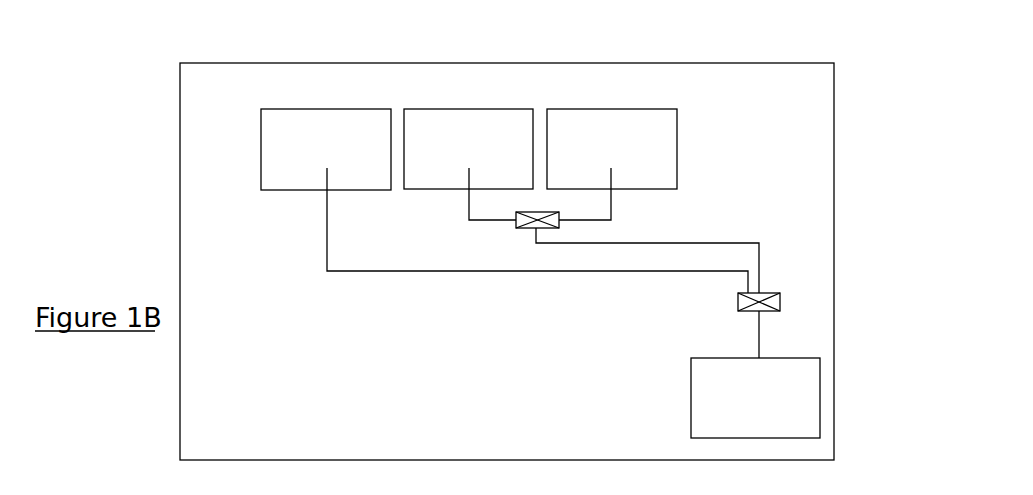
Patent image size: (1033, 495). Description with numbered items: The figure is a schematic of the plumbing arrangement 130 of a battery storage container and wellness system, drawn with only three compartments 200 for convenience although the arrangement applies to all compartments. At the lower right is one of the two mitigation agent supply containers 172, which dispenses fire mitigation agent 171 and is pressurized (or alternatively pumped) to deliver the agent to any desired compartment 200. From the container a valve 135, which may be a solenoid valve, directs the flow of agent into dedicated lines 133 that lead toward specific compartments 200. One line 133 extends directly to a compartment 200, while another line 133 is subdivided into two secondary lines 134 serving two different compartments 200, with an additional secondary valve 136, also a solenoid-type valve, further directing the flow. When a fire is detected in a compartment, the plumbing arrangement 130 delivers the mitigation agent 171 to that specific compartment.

The plumbing arrangement 130 is at (719, 46).
The compartment 200 is at (309, 136).
The dedicated line 133 is at (718, 243).
The secondary line 134 is at (469, 203).
The valve 135 is at (780, 309).
The secondary valve 136 is at (528, 229).
The fire mitigation agent 171 is at (764, 412).
The mitigation agent supply container 172 is at (820, 395).